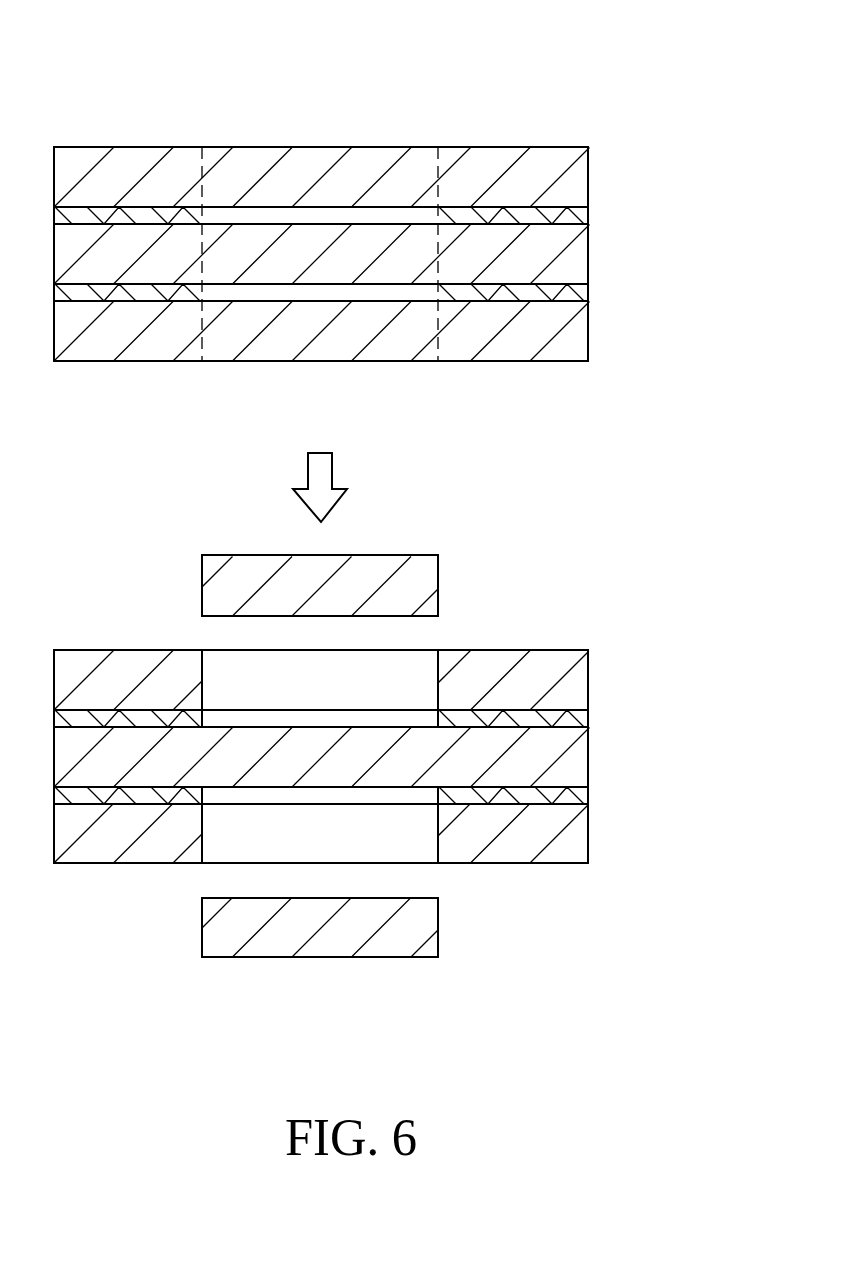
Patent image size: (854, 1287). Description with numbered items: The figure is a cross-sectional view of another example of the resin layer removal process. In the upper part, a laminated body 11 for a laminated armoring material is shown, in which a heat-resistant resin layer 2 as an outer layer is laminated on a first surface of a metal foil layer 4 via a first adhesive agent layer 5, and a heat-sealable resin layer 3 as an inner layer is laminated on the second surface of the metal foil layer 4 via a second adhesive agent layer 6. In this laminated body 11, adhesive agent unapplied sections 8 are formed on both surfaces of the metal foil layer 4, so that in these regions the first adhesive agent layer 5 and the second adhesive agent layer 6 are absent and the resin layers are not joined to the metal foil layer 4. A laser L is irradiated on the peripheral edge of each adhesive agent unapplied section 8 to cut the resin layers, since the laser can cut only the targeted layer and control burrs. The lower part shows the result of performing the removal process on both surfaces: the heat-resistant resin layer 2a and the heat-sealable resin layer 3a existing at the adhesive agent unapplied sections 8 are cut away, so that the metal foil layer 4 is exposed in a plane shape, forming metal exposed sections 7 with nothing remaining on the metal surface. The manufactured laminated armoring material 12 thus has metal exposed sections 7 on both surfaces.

The laminated body for a laminated armoring material 11 is at (565, 102).
The laminated armoring material 12 is at (563, 612).
The heat-resistant resin layer 2 is at (568, 180).
The heat-sealable resin layer 3 is at (573, 332).
The metal foil layer 4 is at (570, 254).
The first adhesive agent layer 5 is at (568, 215).
The second adhesive agent layer 6 is at (570, 290).
The heat-resistant resin layer existing at the adhesive agent unapplied section 2a is at (305, 167).
The heat-sealable resin layer at the adhesive agent unapplied section 3a is at (373, 350).
The metal exposed section 7 is at (248, 682).
The adhesive agent unapplied section 8 is at (368, 218).
The laser L is at (446, 123).